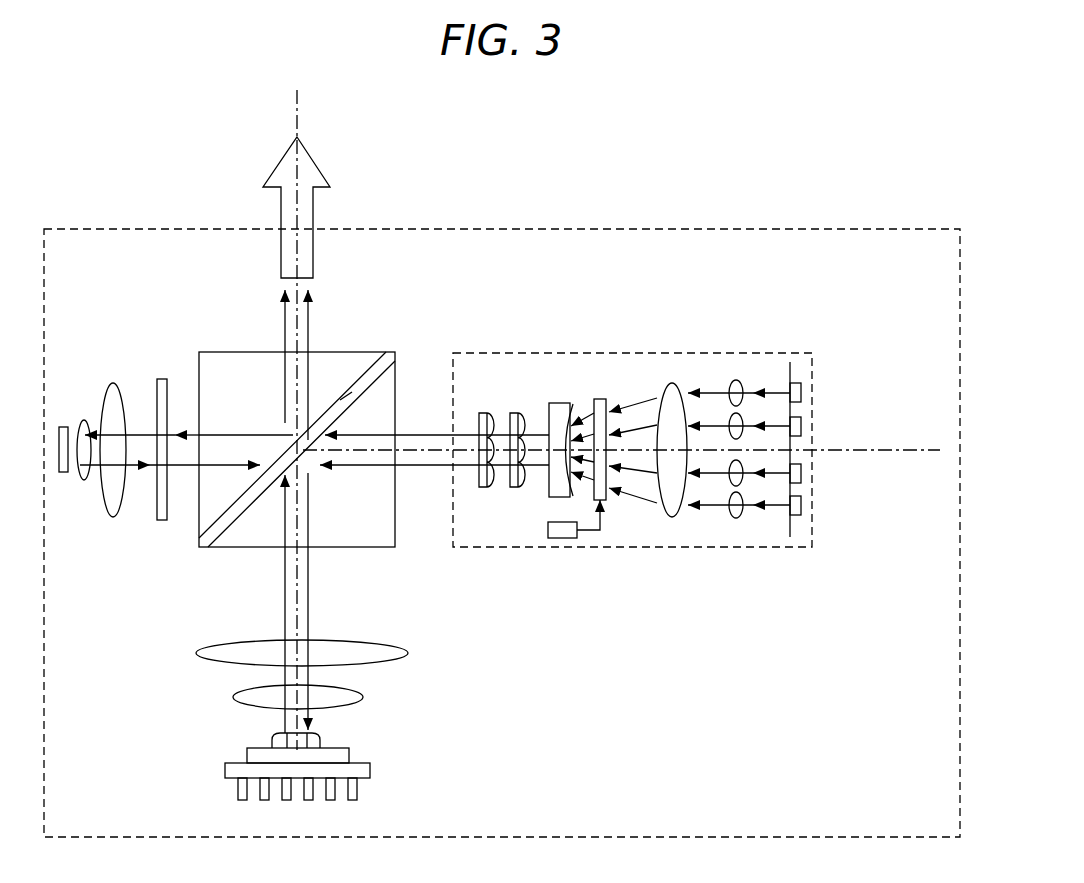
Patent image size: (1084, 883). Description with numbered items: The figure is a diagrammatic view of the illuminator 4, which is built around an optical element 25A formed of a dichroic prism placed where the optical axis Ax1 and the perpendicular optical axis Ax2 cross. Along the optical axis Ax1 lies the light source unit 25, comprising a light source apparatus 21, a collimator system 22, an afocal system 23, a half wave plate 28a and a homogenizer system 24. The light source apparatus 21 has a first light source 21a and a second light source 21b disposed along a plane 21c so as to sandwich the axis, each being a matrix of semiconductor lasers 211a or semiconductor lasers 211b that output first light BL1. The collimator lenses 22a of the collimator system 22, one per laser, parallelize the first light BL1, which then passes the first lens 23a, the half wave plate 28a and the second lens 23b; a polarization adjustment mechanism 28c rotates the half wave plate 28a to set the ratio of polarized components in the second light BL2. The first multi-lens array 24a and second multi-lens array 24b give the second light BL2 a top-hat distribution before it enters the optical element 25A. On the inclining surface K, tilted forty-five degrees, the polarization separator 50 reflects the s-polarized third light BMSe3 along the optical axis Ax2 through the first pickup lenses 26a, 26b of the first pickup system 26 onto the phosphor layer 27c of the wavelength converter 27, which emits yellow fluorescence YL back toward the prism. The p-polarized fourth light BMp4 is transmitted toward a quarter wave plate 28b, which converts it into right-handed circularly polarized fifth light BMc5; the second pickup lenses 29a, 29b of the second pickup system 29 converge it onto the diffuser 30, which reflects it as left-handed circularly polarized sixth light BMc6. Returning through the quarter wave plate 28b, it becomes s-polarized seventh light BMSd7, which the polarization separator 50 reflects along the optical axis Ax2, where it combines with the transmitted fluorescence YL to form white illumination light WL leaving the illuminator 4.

The illuminator 4 is at (810, 229).
The light source apparatus 21 is at (854, 509).
The first light source 21a is at (851, 356).
The second light source 21b is at (852, 547).
The plane 21c is at (790, 535).
The semiconductor lasers 211a is at (801, 392).
The semiconductor lasers 211b is at (801, 473).
The collimator system 22 is at (731, 485).
The collimator lenses 22a is at (736, 380).
The afocal system 23 is at (618, 387).
The first lens 23a is at (672, 383).
The second lens 23b is at (561, 403).
The homogenizer system 24 is at (501, 372).
The first multi-lens array 24a is at (516, 413).
The second multi-lens array 24b is at (483, 413).
The light source unit 25 is at (665, 548).
The optical element 25A is at (396, 548).
The first pickup system 26 is at (363, 678).
The first pickup lens 26a is at (408, 655).
The first pickup lens 26b is at (360, 706).
The wavelength converter 27 is at (346, 755).
The phosphor layer 27c is at (272, 745).
The half wave plate 28a is at (606, 500).
The quarter wave plate 28b is at (162, 379).
The polarization adjustment mechanism 28c is at (565, 538).
The second pickup system 29 is at (95, 526).
The second pickup lens 29a is at (114, 518).
The second pickup lens 29b is at (80, 482).
The diffuser 30 is at (64, 427).
The polarization separator 50 is at (388, 356).
The inclining surface K is at (349, 397).
The optical axis Ax1 is at (930, 449).
The optical axis Ax2 is at (300, 113).
The illumination light WL is at (313, 200).
The fluorescence YL is at (285, 314).
The first light BL1 is at (770, 393).
The second light BL2 is at (378, 465).
The fifth light BMc5 is at (140, 433).
The sixth light BMc6 is at (133, 468).
The fourth light BMp4 is at (215, 433).
The seventh light BMSd7 is at (310, 320).
The third light BMSe3 is at (308, 616).